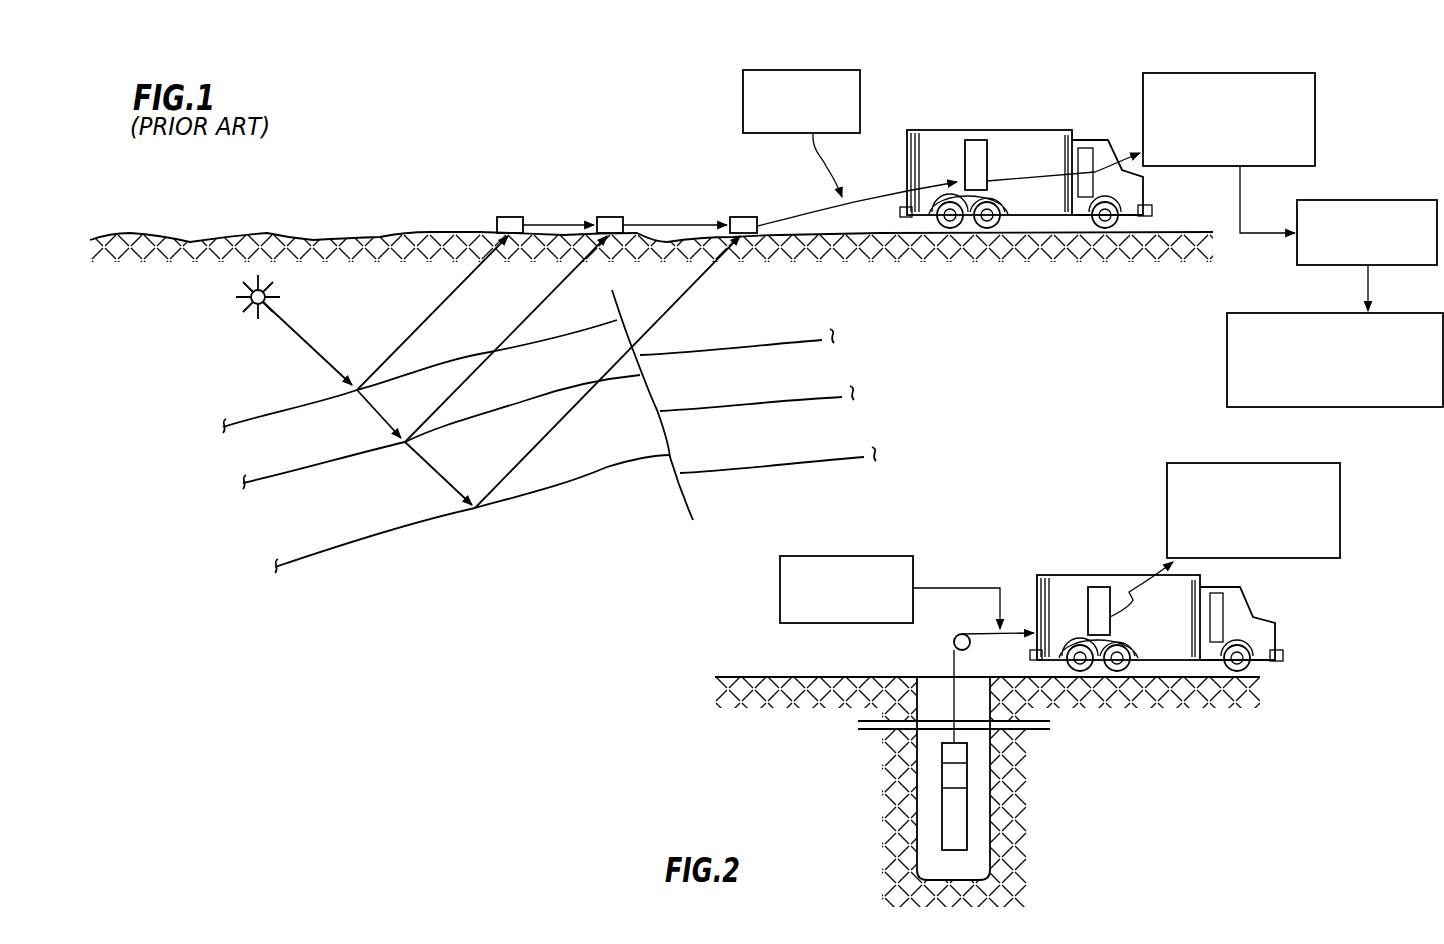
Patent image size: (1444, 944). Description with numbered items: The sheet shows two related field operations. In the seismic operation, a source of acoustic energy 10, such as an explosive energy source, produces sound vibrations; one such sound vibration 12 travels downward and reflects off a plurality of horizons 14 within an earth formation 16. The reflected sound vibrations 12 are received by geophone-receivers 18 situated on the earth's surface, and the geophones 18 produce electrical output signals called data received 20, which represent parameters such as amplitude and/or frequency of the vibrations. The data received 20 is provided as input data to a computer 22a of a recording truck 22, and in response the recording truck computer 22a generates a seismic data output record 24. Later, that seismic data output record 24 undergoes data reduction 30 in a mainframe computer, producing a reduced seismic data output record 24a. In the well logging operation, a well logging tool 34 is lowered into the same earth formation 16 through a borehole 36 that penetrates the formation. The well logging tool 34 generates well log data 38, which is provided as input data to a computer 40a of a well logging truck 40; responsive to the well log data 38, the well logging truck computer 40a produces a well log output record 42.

In FIG. 1, the source of acoustic energy 10 is at (250, 294).
In FIG. 1, the sound vibration 12 is at (396, 346).
In FIG. 1, the horizons 14 is at (218, 432).
In FIG. 1, the earth formation 16 is at (605, 531).
In FIG. 2, the earth formation 16 is at (798, 829).
In FIG. 1, the geophone-receivers 18 is at (600, 213).
In FIG. 1, the data received 20 is at (742, 120).
In FIG. 1, the recording truck 22 is at (932, 130).
In FIG. 1, the recording truck computer 22a is at (977, 140).
In FIG. 1, the seismic data output record 24 is at (1318, 126).
In FIG. 1, the reduced seismic data output record 24a is at (1290, 312).
In FIG. 1, the data reduction 30 is at (1370, 200).
In FIG. 2, the well logging tool 34 is at (968, 827).
In FIG. 2, the borehole 36 is at (1040, 812).
In FIG. 2, the well log data 38 is at (777, 576).
In FIG. 2, the well logging truck 40 is at (1250, 617).
In FIG. 2, the well logging truck computer 40a is at (1101, 586).
In FIG. 2, the well log output record 42 is at (1331, 562).